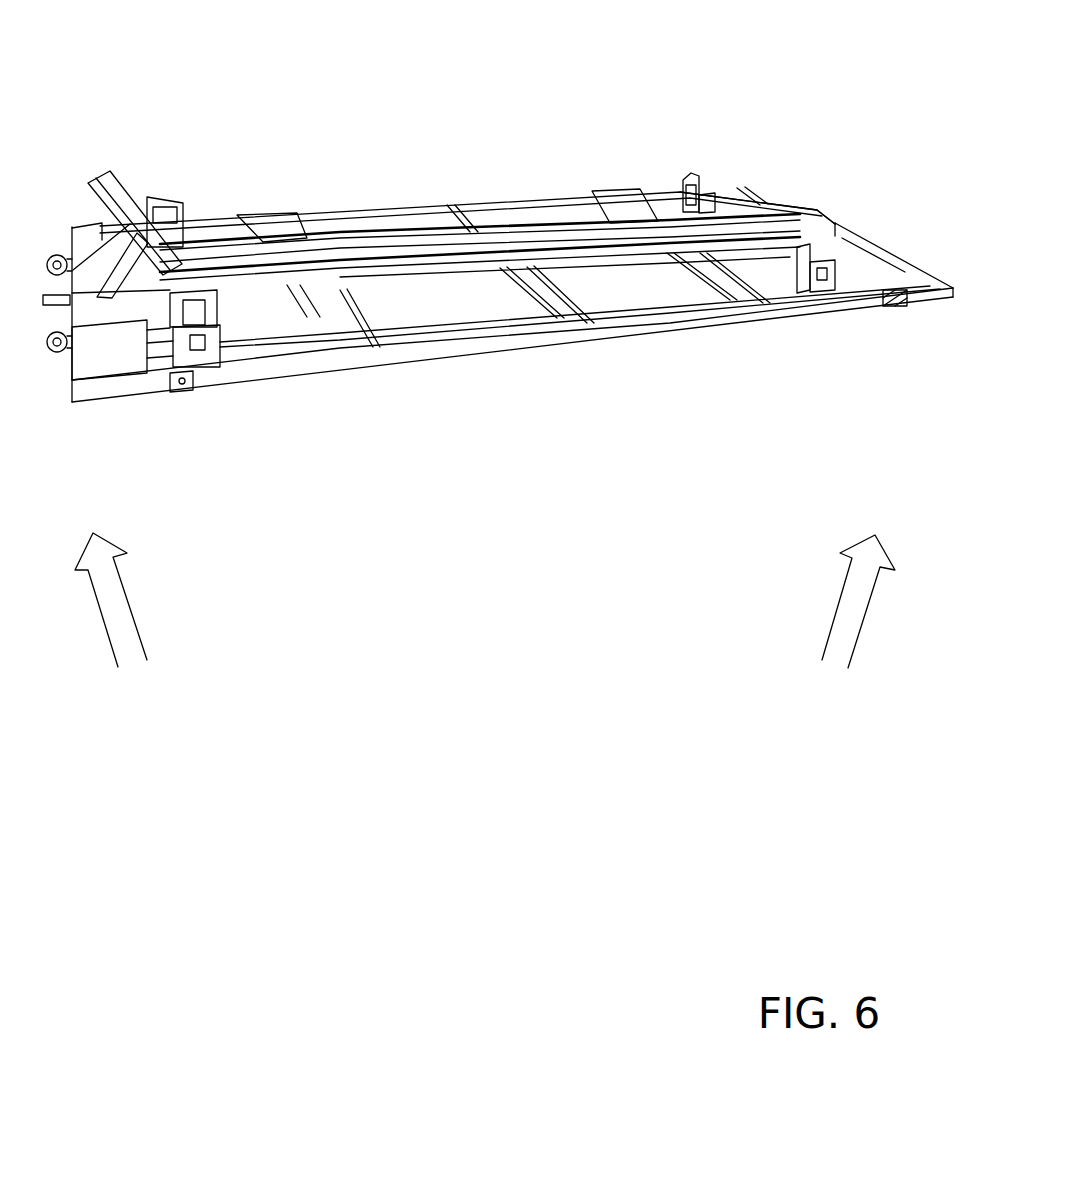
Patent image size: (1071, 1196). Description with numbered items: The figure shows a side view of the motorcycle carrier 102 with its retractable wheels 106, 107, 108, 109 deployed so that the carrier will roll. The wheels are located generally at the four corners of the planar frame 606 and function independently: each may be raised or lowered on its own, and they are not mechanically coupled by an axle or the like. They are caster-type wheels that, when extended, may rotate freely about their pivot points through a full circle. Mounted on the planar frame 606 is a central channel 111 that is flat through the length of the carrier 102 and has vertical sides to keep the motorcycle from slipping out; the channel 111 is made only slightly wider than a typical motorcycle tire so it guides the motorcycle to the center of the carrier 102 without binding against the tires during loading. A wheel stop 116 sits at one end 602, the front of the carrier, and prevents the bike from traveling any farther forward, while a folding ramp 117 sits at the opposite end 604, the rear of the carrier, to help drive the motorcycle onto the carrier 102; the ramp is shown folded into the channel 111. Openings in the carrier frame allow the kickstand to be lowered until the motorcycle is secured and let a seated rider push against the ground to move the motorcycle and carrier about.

The motorcycle carrier 102 is at (501, 522).
The retractable wheel 106 is at (830, 290).
The retractable wheel 107 is at (703, 195).
The retractable wheel 108 is at (187, 368).
The retractable wheel 109 is at (183, 203).
The central channel 111 is at (355, 247).
The wheel stop 116 is at (123, 200).
The folding ramp 117 is at (817, 213).
The front of carrier 602 is at (118, 668).
The rear of carrier 604 is at (849, 667).
The planar frame 606 is at (427, 333).